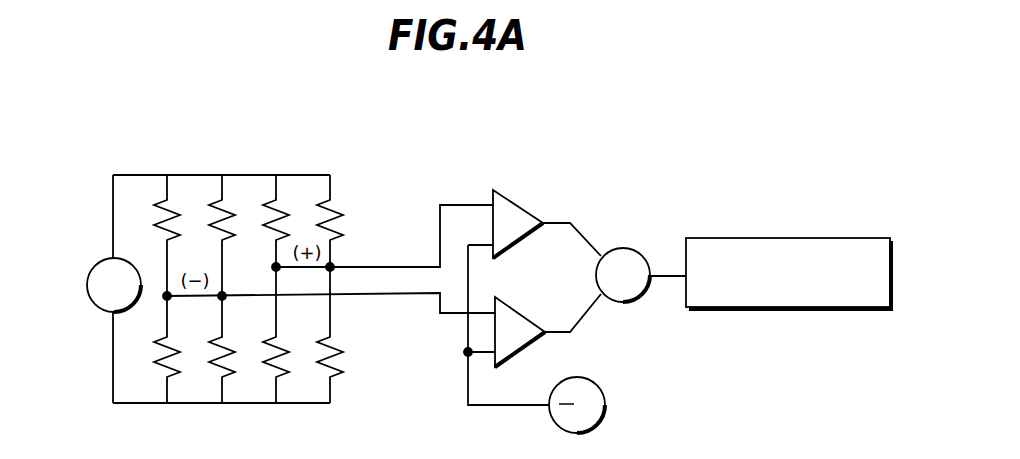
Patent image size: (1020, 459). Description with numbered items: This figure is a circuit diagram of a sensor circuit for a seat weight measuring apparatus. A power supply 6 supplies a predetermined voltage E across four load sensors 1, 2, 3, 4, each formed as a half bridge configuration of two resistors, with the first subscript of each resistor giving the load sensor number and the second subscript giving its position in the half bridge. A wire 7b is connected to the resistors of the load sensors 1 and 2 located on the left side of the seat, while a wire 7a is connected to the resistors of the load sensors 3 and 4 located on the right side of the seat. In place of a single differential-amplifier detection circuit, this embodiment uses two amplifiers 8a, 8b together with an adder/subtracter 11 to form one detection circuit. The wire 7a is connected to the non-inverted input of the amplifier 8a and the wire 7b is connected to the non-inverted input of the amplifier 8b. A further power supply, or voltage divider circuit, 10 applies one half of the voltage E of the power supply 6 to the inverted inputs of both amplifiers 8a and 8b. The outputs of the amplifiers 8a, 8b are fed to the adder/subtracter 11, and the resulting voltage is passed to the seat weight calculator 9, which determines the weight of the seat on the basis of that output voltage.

The load sensor 1 is at (168, 162).
The load sensor 2 is at (223, 162).
The load sensor 3 is at (277, 162).
The load sensor 4 is at (331, 162).
The power supply 6 is at (90, 265).
The wire 7a is at (360, 266).
The wire 7b is at (368, 294).
The amplifier 8a is at (510, 194).
The amplifier 8b is at (512, 301).
The seat weight calculator 9 is at (757, 238).
The power supply (or voltage divider circuit) 10 is at (592, 378).
The adder/subtracter 11 is at (644, 250).